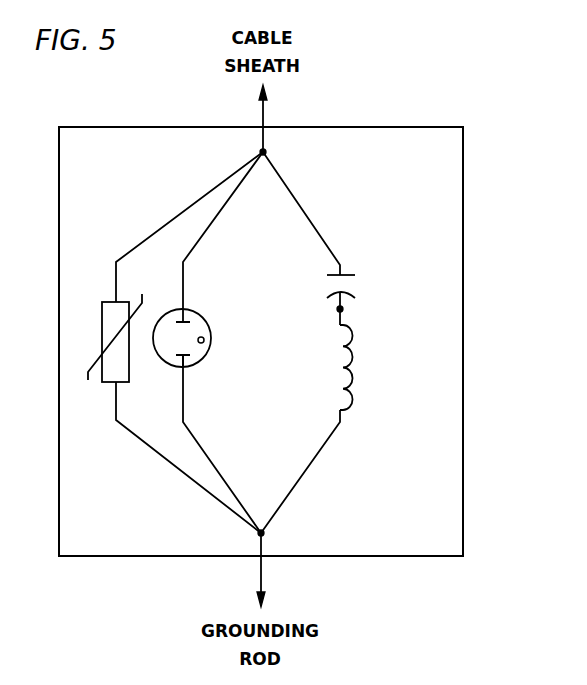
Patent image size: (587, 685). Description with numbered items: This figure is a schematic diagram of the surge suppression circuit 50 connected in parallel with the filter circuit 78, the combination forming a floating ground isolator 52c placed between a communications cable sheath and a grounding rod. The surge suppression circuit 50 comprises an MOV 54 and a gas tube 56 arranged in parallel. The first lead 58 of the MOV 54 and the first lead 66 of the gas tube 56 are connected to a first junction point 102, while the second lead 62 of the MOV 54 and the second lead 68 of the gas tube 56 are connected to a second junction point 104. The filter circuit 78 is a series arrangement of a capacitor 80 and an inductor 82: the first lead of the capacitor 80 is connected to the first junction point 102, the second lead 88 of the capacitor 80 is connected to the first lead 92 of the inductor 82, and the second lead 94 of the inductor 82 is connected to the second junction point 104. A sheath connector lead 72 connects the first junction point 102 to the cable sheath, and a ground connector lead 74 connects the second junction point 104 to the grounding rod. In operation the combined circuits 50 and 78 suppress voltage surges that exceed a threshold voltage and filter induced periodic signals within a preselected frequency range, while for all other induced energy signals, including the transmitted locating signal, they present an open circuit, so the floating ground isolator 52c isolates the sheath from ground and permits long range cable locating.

The surge suppression circuit 50 is at (140, 522).
The floating ground isolator 52c is at (464, 200).
The MOV 54 is at (103, 320).
The gas tube 56 is at (212, 347).
The first lead of the MOV 58 is at (180, 215).
The second lead of the MOV 62 is at (162, 460).
The first lead of the gas tube 66 is at (213, 225).
The second lead of the gas tube 68 is at (200, 446).
The sheath connector lead 72 is at (260, 139).
The ground connector lead 74 is at (262, 548).
The filter circuit 78 is at (427, 473).
The capacitor 80 is at (330, 297).
The inductor 82 is at (362, 366).
The second lead of the capacitor 88 is at (345, 307).
The first lead of the inductor 92 is at (336, 318).
The second lead of the inductor 94 is at (315, 455).
The first junction point 102 is at (268, 145).
The second junction point 104 is at (258, 536).